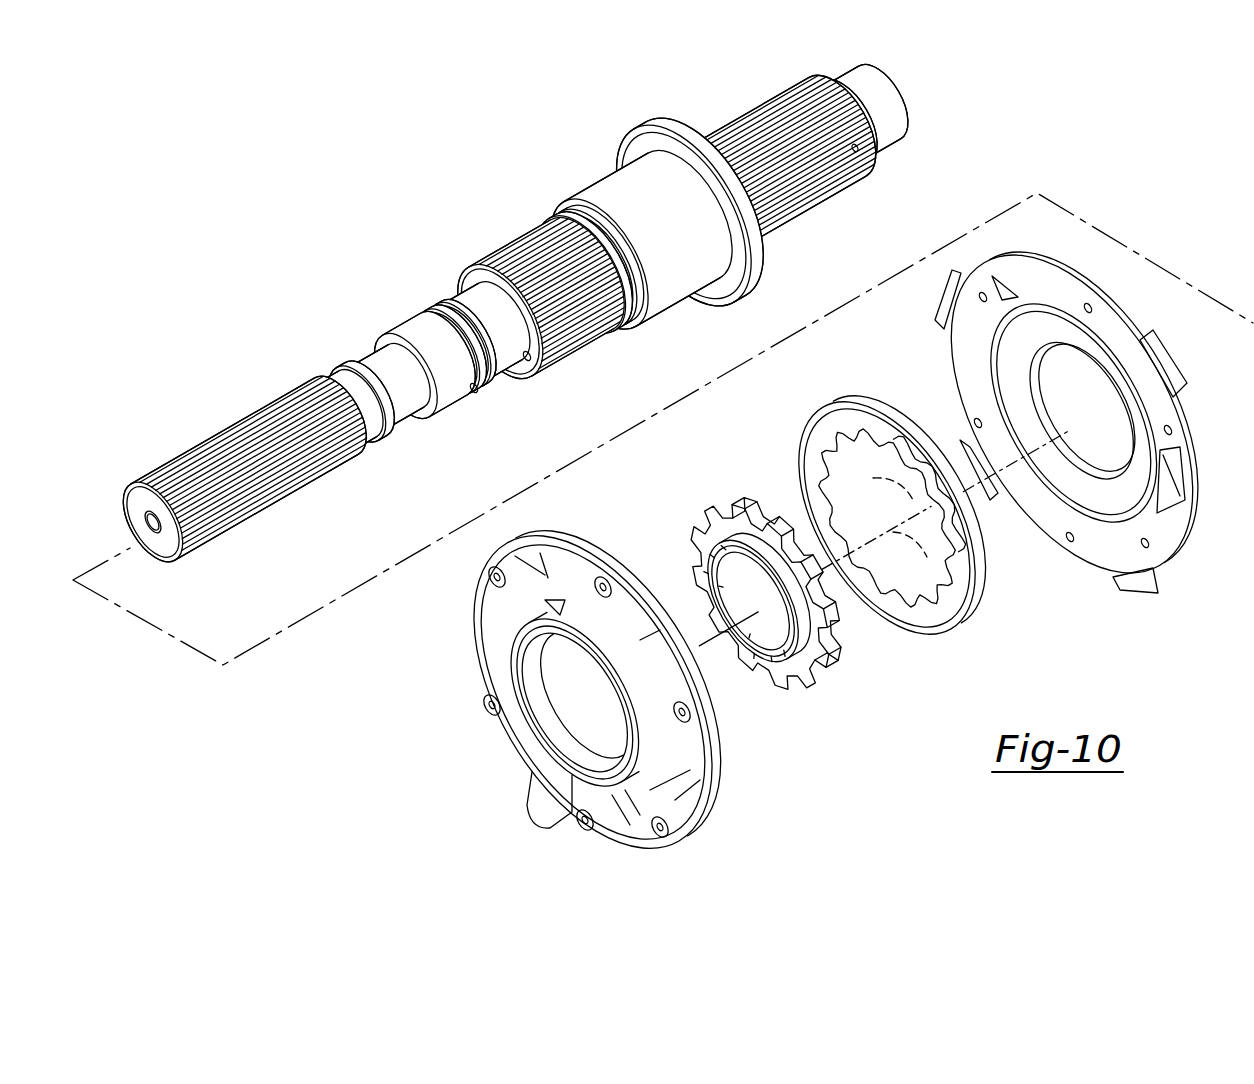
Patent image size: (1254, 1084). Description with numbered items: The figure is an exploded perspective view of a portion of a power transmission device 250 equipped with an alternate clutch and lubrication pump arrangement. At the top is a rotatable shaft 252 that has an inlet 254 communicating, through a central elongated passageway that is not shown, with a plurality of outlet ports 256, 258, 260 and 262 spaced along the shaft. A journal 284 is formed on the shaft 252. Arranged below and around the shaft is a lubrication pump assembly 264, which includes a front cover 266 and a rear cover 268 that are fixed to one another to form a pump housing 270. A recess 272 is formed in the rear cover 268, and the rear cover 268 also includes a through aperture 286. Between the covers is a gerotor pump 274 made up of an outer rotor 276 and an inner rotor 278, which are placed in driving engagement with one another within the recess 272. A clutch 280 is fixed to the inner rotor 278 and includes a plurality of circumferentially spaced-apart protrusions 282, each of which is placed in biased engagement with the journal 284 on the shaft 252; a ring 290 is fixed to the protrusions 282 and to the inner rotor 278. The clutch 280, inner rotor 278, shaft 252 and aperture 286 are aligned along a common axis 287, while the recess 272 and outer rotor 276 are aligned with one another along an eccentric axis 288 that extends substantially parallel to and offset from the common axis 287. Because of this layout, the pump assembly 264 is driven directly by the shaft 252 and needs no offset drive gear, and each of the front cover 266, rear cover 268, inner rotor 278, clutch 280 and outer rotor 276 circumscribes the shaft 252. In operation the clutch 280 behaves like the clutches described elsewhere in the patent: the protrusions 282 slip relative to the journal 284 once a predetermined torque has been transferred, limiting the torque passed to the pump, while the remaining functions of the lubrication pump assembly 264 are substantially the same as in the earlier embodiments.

The power transmission device 250 is at (520, 306).
The rotatable shaft 252 is at (228, 404).
The inlet 254 is at (478, 392).
The outlet port 256 is at (530, 360).
The outlet port 258 is at (615, 300).
The outlet port 260 is at (716, 258).
The outlet port 262 is at (858, 152).
The lubrication pump assembly 264 is at (806, 815).
The front cover 266 is at (610, 830).
The rear cover 268 is at (1052, 425).
The pump housing 270 is at (576, 690).
The recess 272 is at (990, 368).
The gerotor pump 274 is at (833, 716).
The outer rotor 276 is at (887, 518).
The inner rotor 278 is at (737, 588).
The clutch 280 is at (727, 597).
The protrusion 282 is at (748, 555).
The journal 284 is at (416, 318).
The through aperture 286 is at (1047, 420).
The common axis 287 is at (918, 561).
The eccentric axis 288 is at (875, 479).
The ring 290 is at (706, 523).